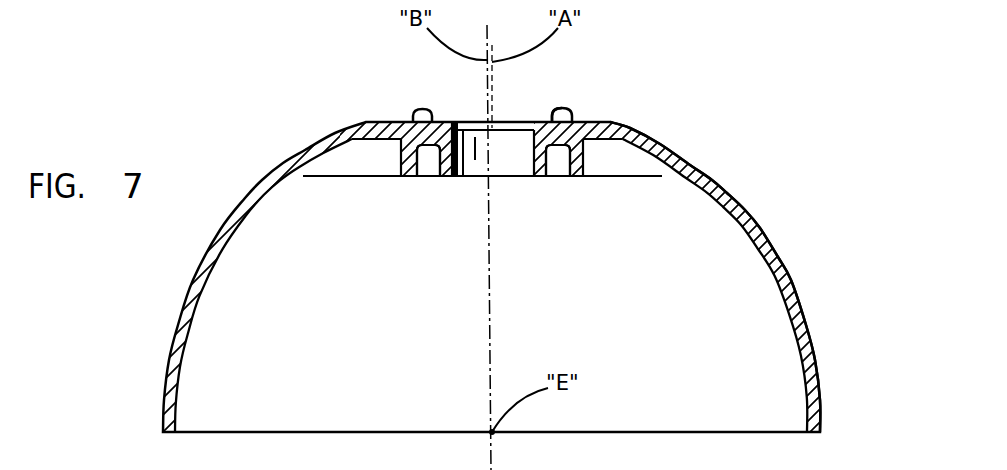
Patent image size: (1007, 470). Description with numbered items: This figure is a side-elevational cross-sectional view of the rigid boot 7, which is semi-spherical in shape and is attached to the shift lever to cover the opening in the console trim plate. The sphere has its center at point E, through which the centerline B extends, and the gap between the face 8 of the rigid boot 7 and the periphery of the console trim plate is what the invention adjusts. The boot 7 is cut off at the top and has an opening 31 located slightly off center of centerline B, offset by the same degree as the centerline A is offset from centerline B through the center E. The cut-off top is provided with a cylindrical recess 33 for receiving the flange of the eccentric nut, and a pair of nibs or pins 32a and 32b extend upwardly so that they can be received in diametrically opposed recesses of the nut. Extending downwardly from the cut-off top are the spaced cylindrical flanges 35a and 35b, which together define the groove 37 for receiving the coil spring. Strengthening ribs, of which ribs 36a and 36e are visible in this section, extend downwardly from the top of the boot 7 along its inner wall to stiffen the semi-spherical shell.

The rigid boot 7 is at (779, 256).
The face 8 is at (712, 180).
The opening 31 is at (513, 128).
The nib 32a is at (422, 113).
The nib 32b is at (567, 112).
The cylindrical recess 33 is at (545, 122).
The cylindrical flange 35a is at (413, 178).
The cylindrical flange 35b is at (443, 178).
The strengthening rib 36a is at (350, 162).
The strengthening rib 36e is at (630, 168).
The groove 37 is at (428, 178).